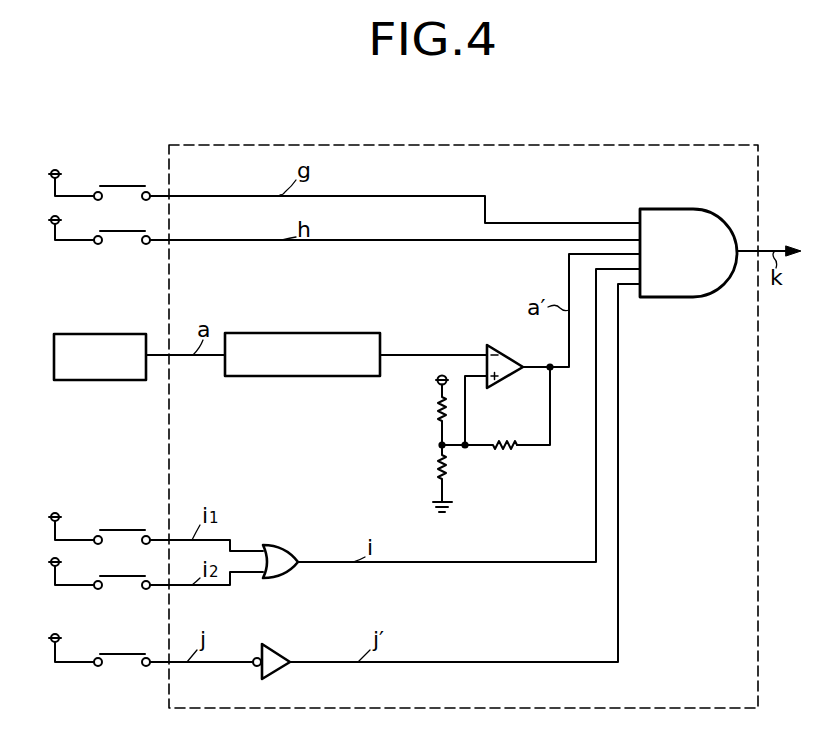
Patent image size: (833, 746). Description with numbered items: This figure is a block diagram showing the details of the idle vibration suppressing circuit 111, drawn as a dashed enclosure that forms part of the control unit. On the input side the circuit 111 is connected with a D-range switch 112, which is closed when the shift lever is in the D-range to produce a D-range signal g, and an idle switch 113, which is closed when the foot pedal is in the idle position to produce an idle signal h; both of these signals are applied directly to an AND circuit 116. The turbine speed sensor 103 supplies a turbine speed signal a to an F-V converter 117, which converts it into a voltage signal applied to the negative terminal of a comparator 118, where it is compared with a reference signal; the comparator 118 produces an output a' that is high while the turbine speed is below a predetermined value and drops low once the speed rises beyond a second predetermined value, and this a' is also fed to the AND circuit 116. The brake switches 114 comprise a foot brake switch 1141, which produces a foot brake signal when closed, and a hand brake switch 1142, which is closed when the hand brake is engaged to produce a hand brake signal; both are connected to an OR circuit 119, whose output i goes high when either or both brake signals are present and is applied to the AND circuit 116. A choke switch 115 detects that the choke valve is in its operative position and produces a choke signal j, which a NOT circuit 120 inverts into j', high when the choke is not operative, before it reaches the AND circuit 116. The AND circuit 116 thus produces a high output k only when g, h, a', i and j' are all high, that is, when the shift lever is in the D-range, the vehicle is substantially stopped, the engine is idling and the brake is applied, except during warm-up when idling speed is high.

The turbine speed sensor 103 is at (102, 334).
The idle vibration suppressing circuit 111 is at (641, 121).
The D-range switch 112 is at (124, 186).
The idle switch 113 is at (124, 231).
The brake switches 114 is at (99, 543).
The foot brake switch 1141 is at (126, 530).
The hand brake switch 1142 is at (126, 576).
The choke switch 115 is at (126, 654).
The AND circuit 116 is at (658, 209).
The F-V converter 117 is at (328, 333).
The comparator 118 is at (504, 345).
The OR circuit 119 is at (282, 546).
The NOT circuit 120 is at (275, 648).